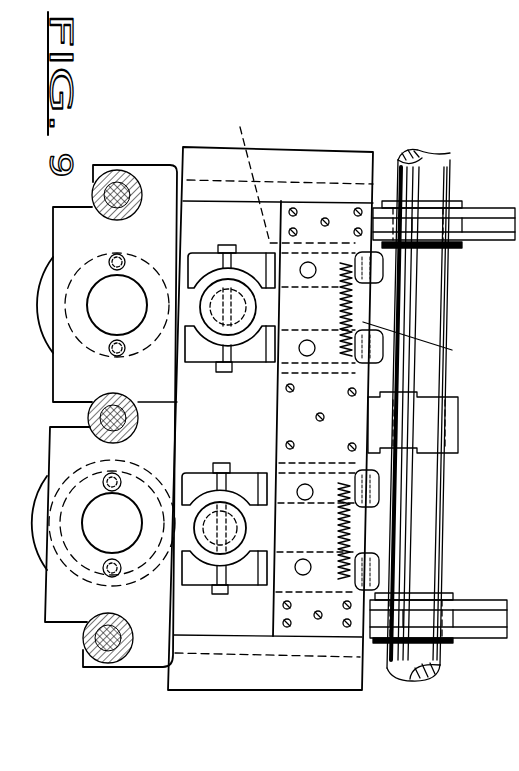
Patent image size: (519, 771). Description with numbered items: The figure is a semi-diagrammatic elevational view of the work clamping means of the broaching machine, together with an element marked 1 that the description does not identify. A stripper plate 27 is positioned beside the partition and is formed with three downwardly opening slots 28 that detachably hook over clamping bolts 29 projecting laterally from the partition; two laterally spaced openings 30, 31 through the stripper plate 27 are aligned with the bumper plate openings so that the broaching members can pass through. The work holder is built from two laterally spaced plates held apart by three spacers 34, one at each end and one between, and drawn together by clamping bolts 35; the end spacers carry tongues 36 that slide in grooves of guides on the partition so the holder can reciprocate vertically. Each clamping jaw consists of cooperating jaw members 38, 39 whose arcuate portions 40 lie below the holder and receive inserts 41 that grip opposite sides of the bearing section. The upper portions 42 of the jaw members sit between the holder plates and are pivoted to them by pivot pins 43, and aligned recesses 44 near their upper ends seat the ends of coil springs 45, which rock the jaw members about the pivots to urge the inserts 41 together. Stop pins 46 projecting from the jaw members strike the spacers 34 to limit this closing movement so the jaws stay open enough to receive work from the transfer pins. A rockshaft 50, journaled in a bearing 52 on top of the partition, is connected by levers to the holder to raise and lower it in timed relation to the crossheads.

The press assembly 1 is at (172, 370).
The stripper plate 27 is at (158, 166).
The downwardly opening slots 28 is at (72, 206).
The clamping bolts 29 is at (136, 206).
The opening 30 is at (490, 227).
The opening 31 is at (87, 312).
The spacers 34 is at (270, 472).
The clamping bolts 35 is at (327, 219).
The tongues 36 is at (296, 200).
The jaw member 38 is at (209, 362).
The jaw member 39 is at (200, 262).
The arcuate portions 40 is at (192, 364).
The inserts 41 is at (242, 343).
The upper portions 42 is at (309, 286).
The pivot pins 43 is at (307, 357).
The recesses 44 is at (372, 329).
The coil springs 45 is at (419, 347).
The pins 46 is at (350, 448).
The rockshaft 50 is at (452, 310).
The bearing 52 is at (456, 425).